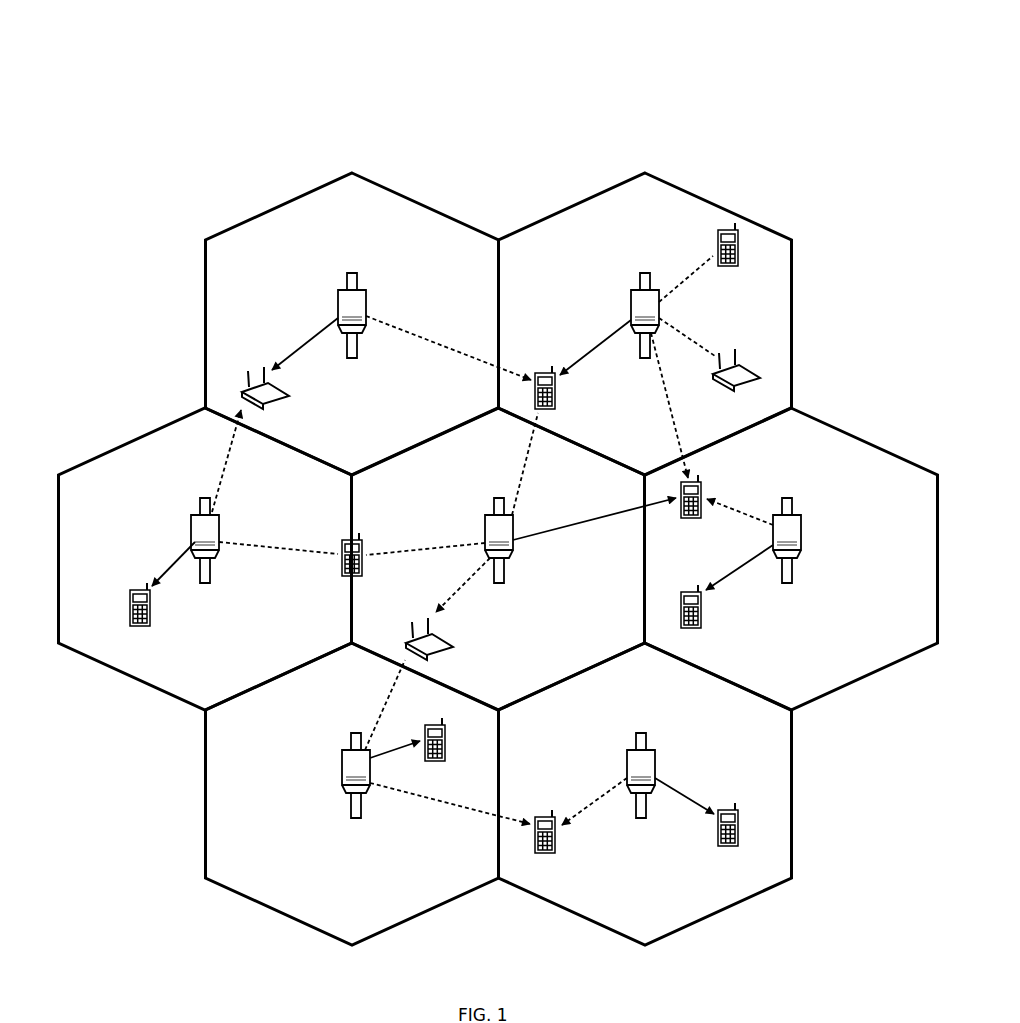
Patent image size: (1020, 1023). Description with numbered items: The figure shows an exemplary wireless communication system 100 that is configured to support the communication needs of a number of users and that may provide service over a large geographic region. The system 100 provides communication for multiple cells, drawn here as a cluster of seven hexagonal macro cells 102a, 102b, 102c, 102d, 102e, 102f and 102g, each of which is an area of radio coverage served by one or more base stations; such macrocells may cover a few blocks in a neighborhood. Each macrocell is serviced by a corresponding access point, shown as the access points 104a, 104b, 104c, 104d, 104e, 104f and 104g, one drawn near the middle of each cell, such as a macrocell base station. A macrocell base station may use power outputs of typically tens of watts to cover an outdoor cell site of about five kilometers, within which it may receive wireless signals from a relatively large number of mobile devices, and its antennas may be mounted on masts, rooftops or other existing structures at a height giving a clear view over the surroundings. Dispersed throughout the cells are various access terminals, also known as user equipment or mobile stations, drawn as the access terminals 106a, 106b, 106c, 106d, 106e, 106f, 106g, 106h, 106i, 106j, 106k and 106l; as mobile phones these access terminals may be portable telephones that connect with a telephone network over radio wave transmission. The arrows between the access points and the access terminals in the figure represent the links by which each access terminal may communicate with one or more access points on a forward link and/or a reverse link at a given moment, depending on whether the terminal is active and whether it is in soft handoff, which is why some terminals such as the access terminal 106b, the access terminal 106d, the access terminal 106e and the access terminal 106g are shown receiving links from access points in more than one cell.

The wireless communication system 100 is at (814, 87).
The macro cell 102a is at (280, 206).
The macro cell 102b is at (734, 193).
The macro cell 102c is at (133, 439).
The macro cell 102d is at (520, 447).
The macro cell 102e is at (880, 426).
The macro cell 102f is at (205, 797).
The macro cell 102g is at (792, 799).
The access point 104a is at (338, 298).
The access point 104b is at (631, 298).
The access point 104c is at (191, 523).
The access point 104d is at (485, 523).
The access point 104e is at (801, 523).
The access point 104f is at (342, 755).
The access point 104g is at (627, 758).
The access terminal 106a is at (284, 389).
The access terminal 106b is at (544, 373).
The access terminal 106c is at (130, 610).
The access terminal 106d is at (342, 549).
The access terminal 106e is at (704, 491).
The access terminal 106f is at (430, 722).
The access terminal 106g is at (540, 816).
The access terminal 106h is at (765, 354).
The access terminal 106i is at (718, 241).
The access terminal 106j is at (452, 642).
The access terminal 106k is at (685, 592).
The access terminal 106l is at (727, 810).